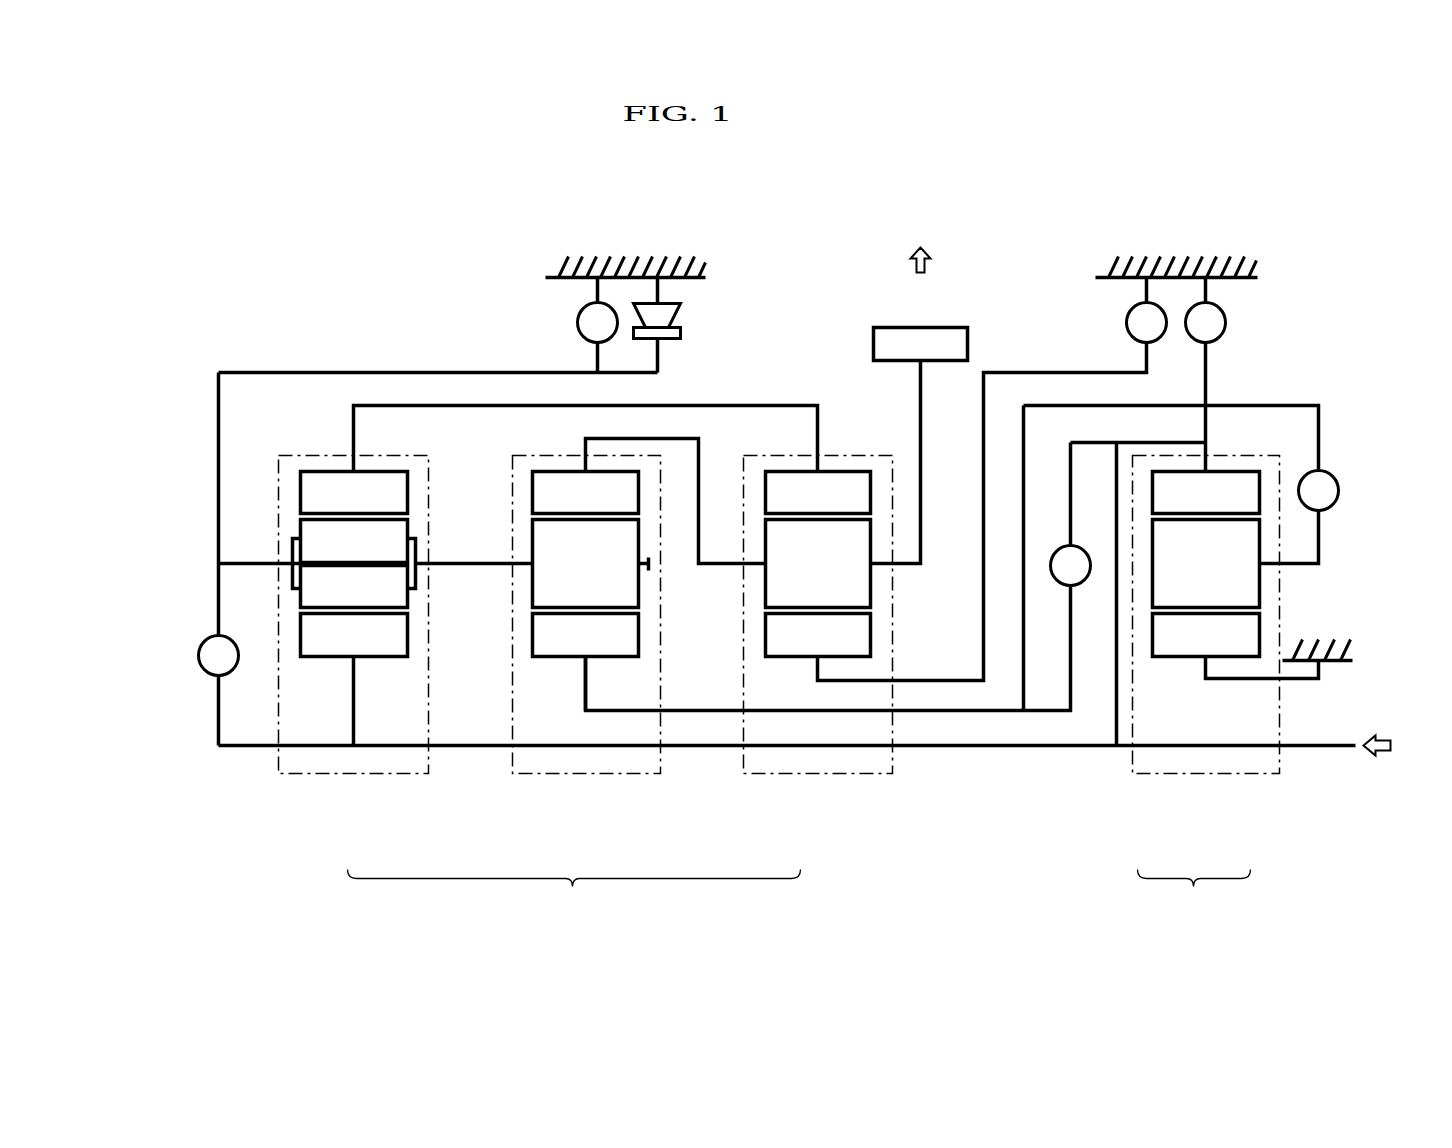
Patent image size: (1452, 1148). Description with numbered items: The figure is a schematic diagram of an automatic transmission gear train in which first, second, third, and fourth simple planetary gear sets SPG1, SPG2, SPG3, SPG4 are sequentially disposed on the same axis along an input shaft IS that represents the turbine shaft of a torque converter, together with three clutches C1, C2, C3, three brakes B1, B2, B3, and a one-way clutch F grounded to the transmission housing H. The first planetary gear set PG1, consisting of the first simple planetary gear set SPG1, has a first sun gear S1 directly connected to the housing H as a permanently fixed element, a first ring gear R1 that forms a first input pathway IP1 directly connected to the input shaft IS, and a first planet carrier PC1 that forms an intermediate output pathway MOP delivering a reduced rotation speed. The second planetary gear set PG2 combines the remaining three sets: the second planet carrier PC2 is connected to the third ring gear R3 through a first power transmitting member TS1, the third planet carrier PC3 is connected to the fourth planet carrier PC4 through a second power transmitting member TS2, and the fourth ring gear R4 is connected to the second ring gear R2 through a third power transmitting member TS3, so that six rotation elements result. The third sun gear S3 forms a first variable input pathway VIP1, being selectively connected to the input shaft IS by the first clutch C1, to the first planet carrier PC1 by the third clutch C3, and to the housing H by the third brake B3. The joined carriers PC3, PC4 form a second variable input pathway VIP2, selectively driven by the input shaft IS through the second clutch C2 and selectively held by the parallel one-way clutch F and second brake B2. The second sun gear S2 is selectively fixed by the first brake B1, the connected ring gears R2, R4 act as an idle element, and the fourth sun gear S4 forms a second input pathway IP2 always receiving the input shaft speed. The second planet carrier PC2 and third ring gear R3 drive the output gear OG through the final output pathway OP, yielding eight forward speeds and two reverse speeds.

The transmission housing H is at (612, 266).
The second brake B2 is at (598, 325).
The first brake B1 is at (992, 479).
The third brake B3 is at (1206, 375).
The one-way clutch F is at (668, 325).
The first clutch C1 is at (896, 577).
The second clutch C2 is at (219, 656).
The third clutch C3 is at (1181, 558).
The first power transmitting member TS1 is at (712, 565).
The second power transmitting member TS2 is at (450, 563).
The third power transmitting member TS3 is at (718, 404).
The output gear OG is at (921, 304).
The output pathway OP is at (922, 575).
The intermediate output pathway MOP is at (1317, 575).
The input shaft IS is at (974, 749).
The first input pathway IP1 is at (1105, 716).
The second input pathway IP2 is at (363, 678).
The first variable input pathway VIP1 is at (567, 673).
The second variable input pathway VIP2 is at (248, 546).
The first planetary gear set PG1 is at (1194, 893).
The second planetary gear set PG2 is at (574, 893).
The first simple planetary gear set SPG1 is at (1231, 660).
The second simple planetary gear set SPG2 is at (842, 660).
The third simple planetary gear set SPG3 is at (561, 660).
The fourth simple planetary gear set SPG4 is at (326, 660).
The first ring gear R1 is at (1206, 493).
The second ring gear R2 is at (818, 493).
The third ring gear R3 is at (586, 493).
The fourth ring gear R4 is at (354, 493).
The first sun gear S1 is at (1236, 646).
The second sun gear S2 is at (818, 635).
The third sun gear S3 is at (586, 635).
The fourth sun gear S4 is at (354, 635).
The first planet carrier PC1 is at (1302, 565).
The second planet carrier PC2 is at (917, 565).
The third planet carrier PC3 is at (484, 565).
The fourth planet carrier PC4 is at (246, 565).